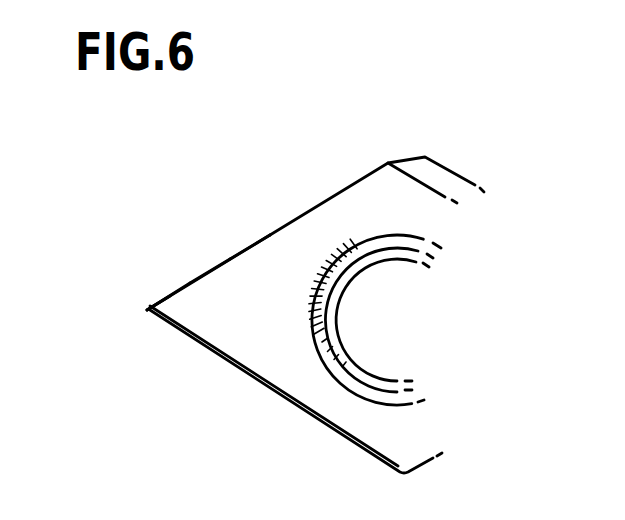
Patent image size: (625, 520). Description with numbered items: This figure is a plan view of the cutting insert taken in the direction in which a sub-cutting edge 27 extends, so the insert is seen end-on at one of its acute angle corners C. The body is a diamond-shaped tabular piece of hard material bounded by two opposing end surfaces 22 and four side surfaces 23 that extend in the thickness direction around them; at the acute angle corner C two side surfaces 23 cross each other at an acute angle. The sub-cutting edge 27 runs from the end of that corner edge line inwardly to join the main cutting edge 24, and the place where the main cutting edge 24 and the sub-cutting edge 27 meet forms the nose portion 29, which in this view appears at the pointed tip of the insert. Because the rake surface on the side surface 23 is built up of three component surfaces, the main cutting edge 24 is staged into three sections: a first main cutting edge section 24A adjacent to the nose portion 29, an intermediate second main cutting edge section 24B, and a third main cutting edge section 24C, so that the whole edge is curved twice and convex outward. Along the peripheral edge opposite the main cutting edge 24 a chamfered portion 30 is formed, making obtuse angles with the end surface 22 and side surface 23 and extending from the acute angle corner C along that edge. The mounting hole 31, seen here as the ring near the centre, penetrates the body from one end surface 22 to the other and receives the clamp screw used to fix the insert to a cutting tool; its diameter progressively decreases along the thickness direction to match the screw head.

The end surface 22 is at (330, 220).
The side surface 23 is at (438, 178).
The main cutting edge 24 is at (122, 125).
The first main cutting edge section 24A is at (178, 283).
The second main cutting edge section 24B is at (216, 256).
The third main cutting edge section 24C is at (267, 232).
The sub-cutting edge 27 is at (153, 317).
The nose portion 29 is at (138, 288).
The chamfered portion 30 is at (165, 318).
The mounting hole 31 is at (334, 287).
The acute angle corner C is at (105, 309).